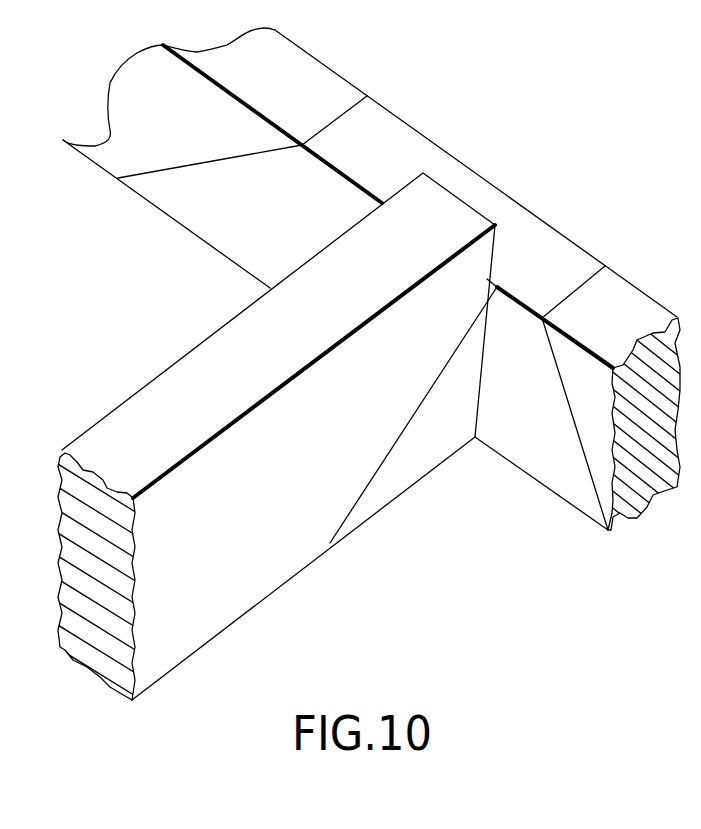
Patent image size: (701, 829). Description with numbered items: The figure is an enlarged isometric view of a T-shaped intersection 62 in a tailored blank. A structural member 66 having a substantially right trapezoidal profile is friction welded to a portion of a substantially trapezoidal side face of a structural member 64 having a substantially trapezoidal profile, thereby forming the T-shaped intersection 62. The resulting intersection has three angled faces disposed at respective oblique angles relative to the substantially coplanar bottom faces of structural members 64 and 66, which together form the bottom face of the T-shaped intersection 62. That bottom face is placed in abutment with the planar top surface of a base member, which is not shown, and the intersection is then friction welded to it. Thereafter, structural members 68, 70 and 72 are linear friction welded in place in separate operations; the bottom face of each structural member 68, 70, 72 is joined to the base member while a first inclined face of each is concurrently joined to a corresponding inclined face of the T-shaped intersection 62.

The T-shaped intersection 62 is at (467, 117).
The structural member 64 is at (552, 239).
The structural member 66 is at (428, 448).
The structural member 68 is at (168, 388).
The structural member 70 is at (315, 75).
The structural member 72 is at (620, 300).